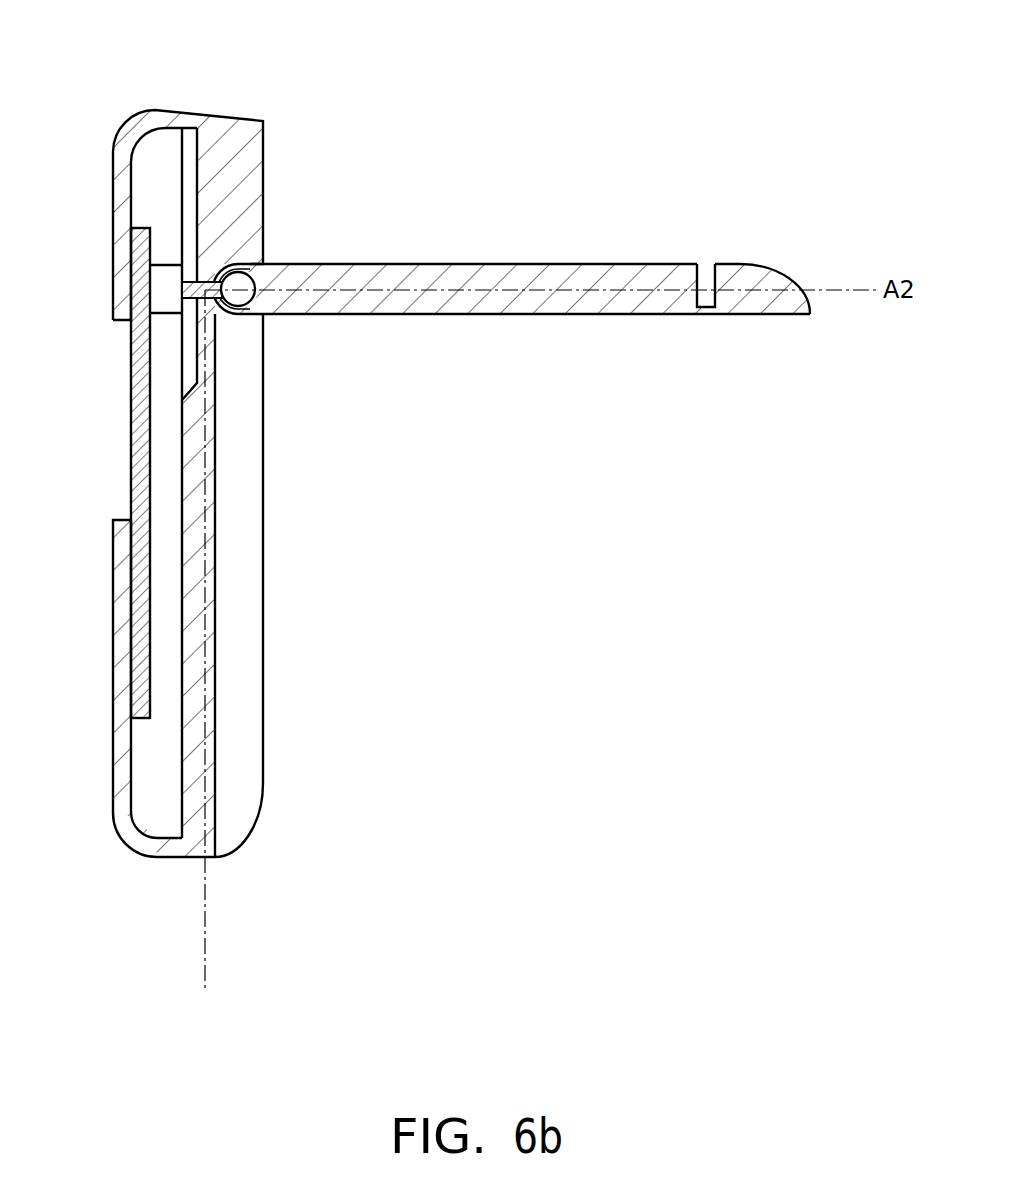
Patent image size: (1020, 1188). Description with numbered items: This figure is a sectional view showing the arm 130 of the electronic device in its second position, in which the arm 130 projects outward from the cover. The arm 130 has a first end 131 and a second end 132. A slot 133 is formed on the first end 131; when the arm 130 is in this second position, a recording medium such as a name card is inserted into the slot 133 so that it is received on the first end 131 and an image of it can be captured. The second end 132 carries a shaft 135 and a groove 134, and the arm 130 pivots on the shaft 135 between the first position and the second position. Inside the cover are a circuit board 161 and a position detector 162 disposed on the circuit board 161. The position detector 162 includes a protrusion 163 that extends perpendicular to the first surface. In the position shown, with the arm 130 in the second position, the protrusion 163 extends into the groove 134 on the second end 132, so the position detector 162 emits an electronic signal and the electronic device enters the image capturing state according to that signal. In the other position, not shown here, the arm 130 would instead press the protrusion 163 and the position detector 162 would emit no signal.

The arm 130 is at (510, 262).
The first end 131 is at (767, 279).
The second end 132 is at (232, 313).
The slot 133 is at (706, 268).
The groove 134 is at (258, 262).
The shaft 135 is at (263, 318).
The circuit board 161 is at (135, 445).
The position detector 162 is at (158, 290).
The protrusion 163 is at (264, 207).